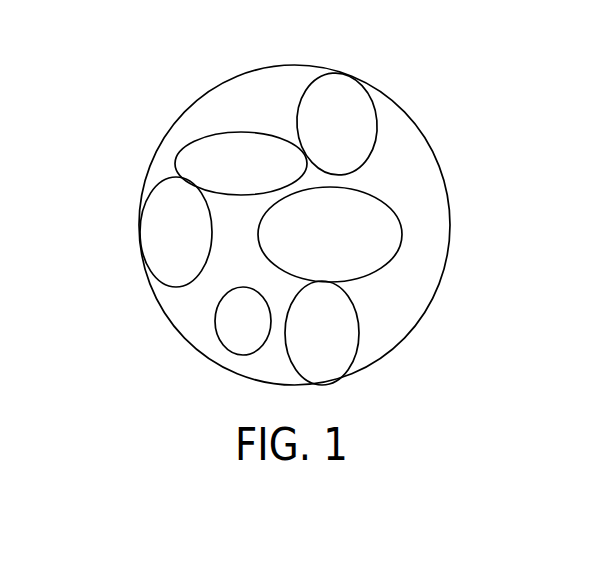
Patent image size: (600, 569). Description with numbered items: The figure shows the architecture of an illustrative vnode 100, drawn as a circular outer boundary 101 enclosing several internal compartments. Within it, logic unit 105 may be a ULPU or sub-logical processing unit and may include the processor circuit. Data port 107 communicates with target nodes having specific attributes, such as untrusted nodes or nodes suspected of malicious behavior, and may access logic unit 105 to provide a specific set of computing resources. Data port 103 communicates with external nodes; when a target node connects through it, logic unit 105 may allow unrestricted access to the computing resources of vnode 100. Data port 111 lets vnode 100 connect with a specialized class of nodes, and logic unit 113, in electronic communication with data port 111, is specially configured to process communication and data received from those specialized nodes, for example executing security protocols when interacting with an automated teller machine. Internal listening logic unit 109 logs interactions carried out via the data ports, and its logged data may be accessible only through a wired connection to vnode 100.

The vnode 100 is at (142, 55).
The outer boundary / plate 101 is at (448, 231).
The data port 103 is at (371, 98).
The logic unit 105 is at (175, 164).
The data port 107 is at (154, 276).
The internal listening logic unit 109 is at (216, 322).
The data port 111 is at (360, 364).
The logic unit 113 is at (402, 244).